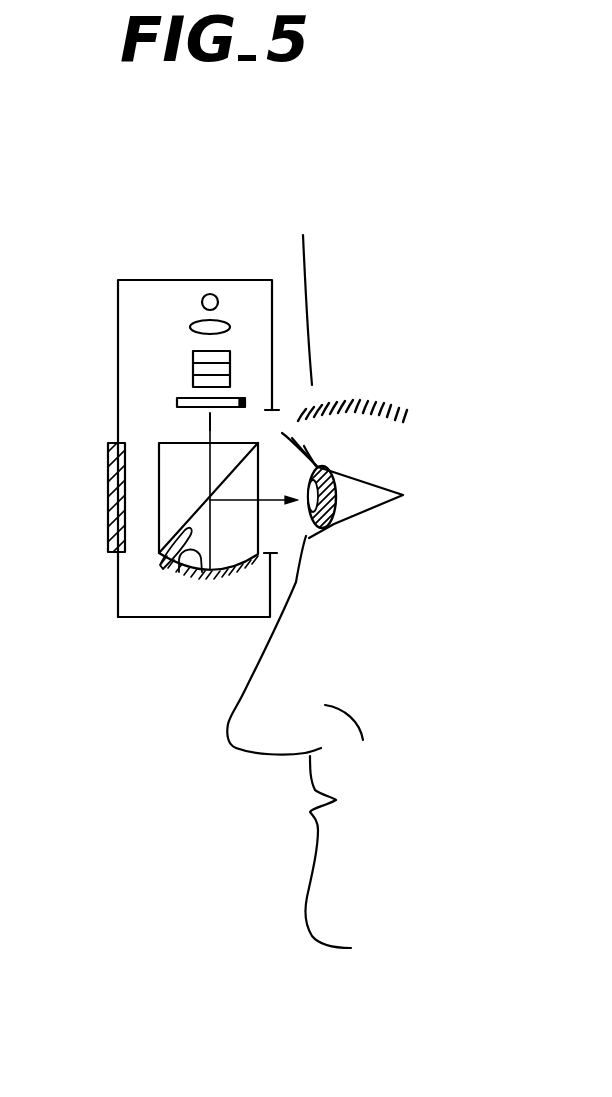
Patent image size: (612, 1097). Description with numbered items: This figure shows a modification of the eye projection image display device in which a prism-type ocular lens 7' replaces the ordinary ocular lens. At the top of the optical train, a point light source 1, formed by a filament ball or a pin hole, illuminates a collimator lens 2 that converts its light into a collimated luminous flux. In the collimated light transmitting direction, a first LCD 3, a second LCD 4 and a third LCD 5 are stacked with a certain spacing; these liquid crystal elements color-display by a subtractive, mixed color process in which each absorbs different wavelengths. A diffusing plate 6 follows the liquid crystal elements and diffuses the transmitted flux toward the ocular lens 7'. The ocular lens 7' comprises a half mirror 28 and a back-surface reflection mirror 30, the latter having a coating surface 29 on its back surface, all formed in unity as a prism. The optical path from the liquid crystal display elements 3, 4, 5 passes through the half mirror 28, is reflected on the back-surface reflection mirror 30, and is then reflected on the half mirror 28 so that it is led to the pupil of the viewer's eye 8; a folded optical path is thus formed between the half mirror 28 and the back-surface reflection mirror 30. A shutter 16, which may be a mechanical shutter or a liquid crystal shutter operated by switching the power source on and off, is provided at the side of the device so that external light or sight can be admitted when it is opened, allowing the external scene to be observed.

The point light source 1 is at (203, 295).
The collimator lens 2 is at (231, 321).
The first LCD 3 is at (229, 354).
The second LCD 4 is at (229, 367).
The third LCD 5 is at (229, 378).
The diffusing plate 6 is at (246, 400).
The ocular lens 7' is at (150, 449).
The eye 8 is at (337, 511).
The shutter 16 is at (108, 500).
The half mirror 28 is at (160, 567).
The coating surface 29 is at (222, 576).
The back-surface reflection mirror 30 is at (181, 575).